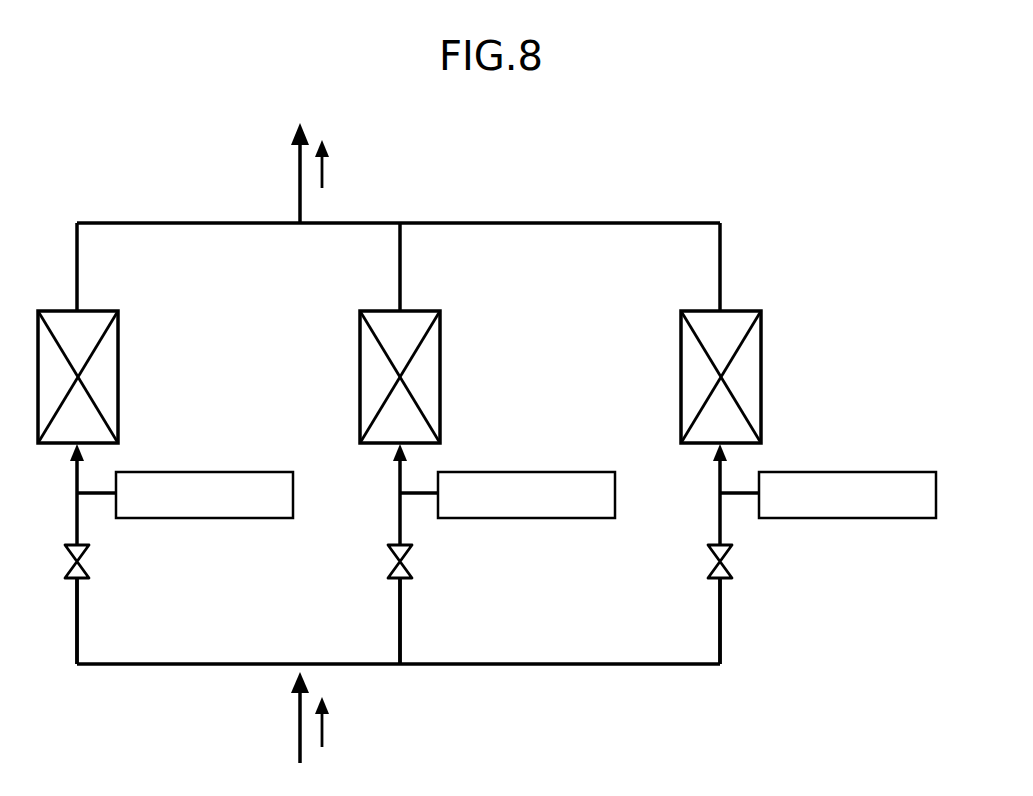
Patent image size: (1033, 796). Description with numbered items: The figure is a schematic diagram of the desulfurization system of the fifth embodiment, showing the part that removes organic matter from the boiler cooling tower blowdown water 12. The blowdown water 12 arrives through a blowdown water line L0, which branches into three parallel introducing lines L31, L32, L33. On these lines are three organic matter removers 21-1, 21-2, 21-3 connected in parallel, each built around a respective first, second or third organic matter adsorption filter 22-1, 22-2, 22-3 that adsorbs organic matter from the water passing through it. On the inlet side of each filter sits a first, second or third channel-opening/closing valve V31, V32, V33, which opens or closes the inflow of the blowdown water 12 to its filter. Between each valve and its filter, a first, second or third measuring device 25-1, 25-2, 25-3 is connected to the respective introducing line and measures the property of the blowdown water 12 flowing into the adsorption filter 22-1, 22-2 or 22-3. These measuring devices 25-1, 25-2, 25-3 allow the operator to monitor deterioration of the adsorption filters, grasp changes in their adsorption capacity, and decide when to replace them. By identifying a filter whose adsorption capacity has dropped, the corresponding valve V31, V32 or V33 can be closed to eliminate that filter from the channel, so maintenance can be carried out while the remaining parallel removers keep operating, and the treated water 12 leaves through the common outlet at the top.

The boiler cooling tower blowdown water 12 is at (324, 165).
The organic matter remover 21-1 is at (165, 443).
The organic matter remover 21-2 is at (487, 443).
The organic matter remover 21-3 is at (808, 443).
The first organic matter adsorption filter 22-1 is at (118, 374).
The second organic matter adsorption filter 22-2 is at (440, 374).
The third organic matter adsorption filter 22-3 is at (761, 374).
The first measuring device 25-1 is at (217, 456).
The second measuring device 25-2 is at (539, 456).
The third measuring device 25-3 is at (860, 456).
The first channel-opening/closing valve V31 is at (85, 563).
The second channel-opening/closing valve V32 is at (408, 563).
The third channel-opening/closing valve V33 is at (728, 563).
The introducing line L31 is at (78, 627).
The introducing line L32 is at (401, 627).
The introducing line L33 is at (721, 627).
The blowdown water line L0 is at (296, 731).